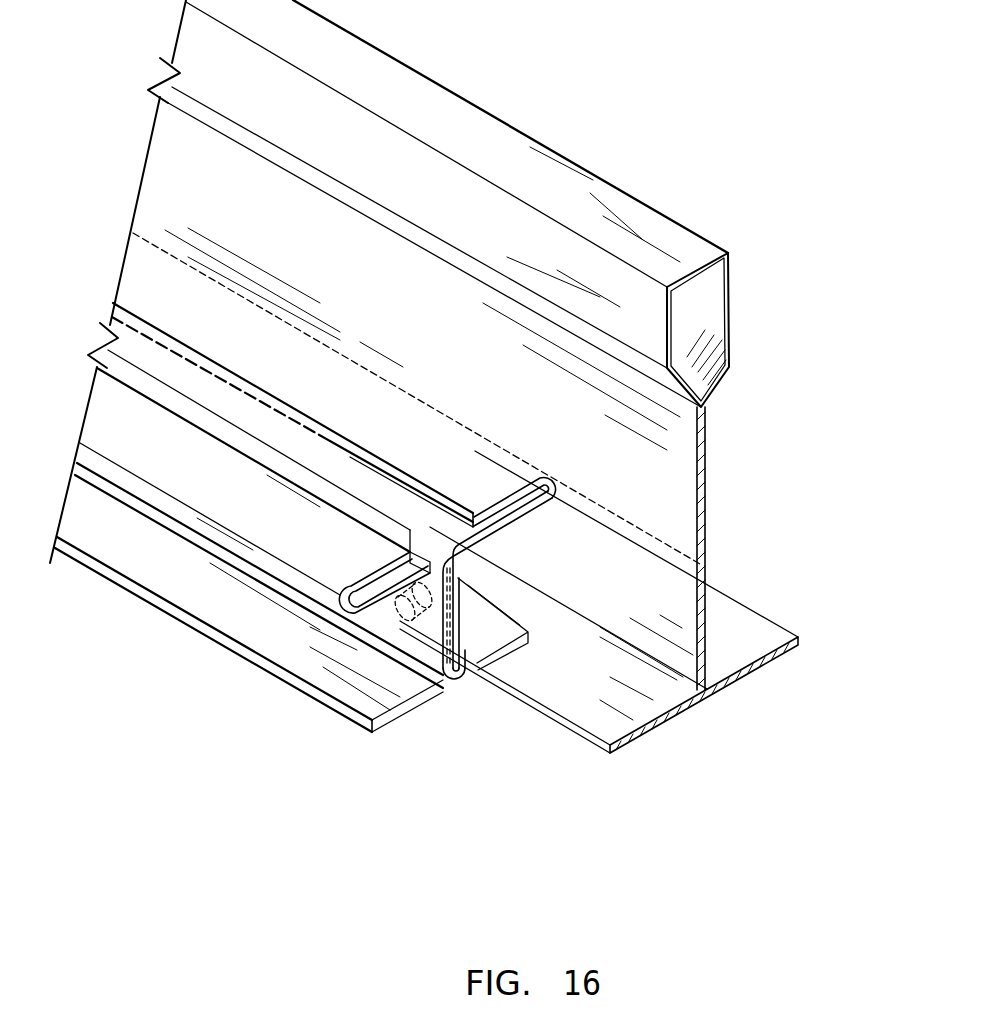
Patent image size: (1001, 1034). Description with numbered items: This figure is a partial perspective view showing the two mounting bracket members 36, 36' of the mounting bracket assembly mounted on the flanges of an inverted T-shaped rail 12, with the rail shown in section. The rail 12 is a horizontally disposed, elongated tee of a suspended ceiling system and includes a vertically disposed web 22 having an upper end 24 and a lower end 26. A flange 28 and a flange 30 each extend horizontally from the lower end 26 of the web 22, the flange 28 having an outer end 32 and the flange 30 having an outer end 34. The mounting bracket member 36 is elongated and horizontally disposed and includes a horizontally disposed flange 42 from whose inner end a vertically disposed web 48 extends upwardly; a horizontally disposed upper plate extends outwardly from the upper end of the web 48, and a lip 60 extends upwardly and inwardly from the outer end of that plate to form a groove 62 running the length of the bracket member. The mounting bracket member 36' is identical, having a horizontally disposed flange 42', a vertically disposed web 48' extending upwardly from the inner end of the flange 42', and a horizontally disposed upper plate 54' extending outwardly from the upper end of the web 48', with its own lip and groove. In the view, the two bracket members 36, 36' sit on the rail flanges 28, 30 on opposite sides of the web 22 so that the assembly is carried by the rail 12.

The inverted T-shaped rail 12 is at (780, 330).
The web 22 is at (708, 478).
The upper end 24 is at (706, 406).
The lower end 26 is at (705, 687).
The flange 28 is at (728, 620).
The flange 30 is at (600, 708).
The outer end 32 is at (803, 642).
The outer end 34 is at (612, 756).
The mounting bracket member 36 is at (382, 319).
The mounting bracket member 36' is at (259, 567).
The flange 42 is at (249, 675).
The flange 42' is at (493, 681).
The web 48 is at (491, 668).
The web 48' is at (617, 588).
The upper plate 54' is at (591, 548).
The lip 60 is at (392, 408).
The groove 62 is at (556, 478).